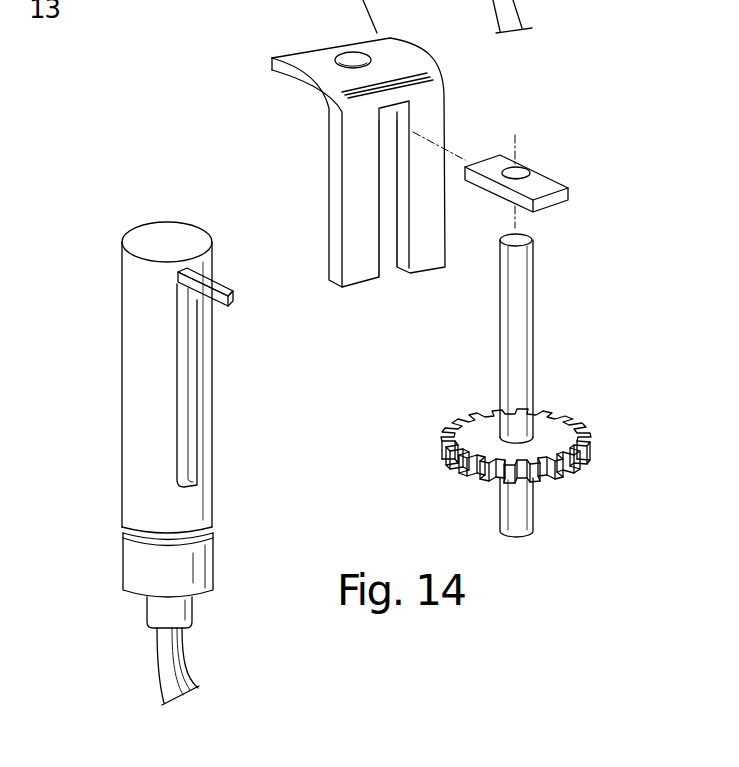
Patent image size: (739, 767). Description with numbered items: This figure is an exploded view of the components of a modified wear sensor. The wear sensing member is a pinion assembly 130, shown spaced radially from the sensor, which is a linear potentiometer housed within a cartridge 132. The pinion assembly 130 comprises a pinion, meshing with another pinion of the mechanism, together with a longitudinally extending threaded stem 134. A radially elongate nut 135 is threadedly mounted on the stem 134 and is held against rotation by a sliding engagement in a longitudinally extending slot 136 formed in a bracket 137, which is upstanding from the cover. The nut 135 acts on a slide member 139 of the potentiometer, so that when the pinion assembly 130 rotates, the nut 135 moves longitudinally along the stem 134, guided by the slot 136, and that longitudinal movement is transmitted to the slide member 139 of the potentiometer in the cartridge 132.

The pinion assembly 130 is at (550, 443).
The cartridge 132 is at (128, 444).
The threaded stem 134 is at (515, 335).
The nut 135 is at (540, 178).
The slot 136 is at (390, 158).
The bracket 137 is at (333, 137).
The slide member 139 is at (233, 300).